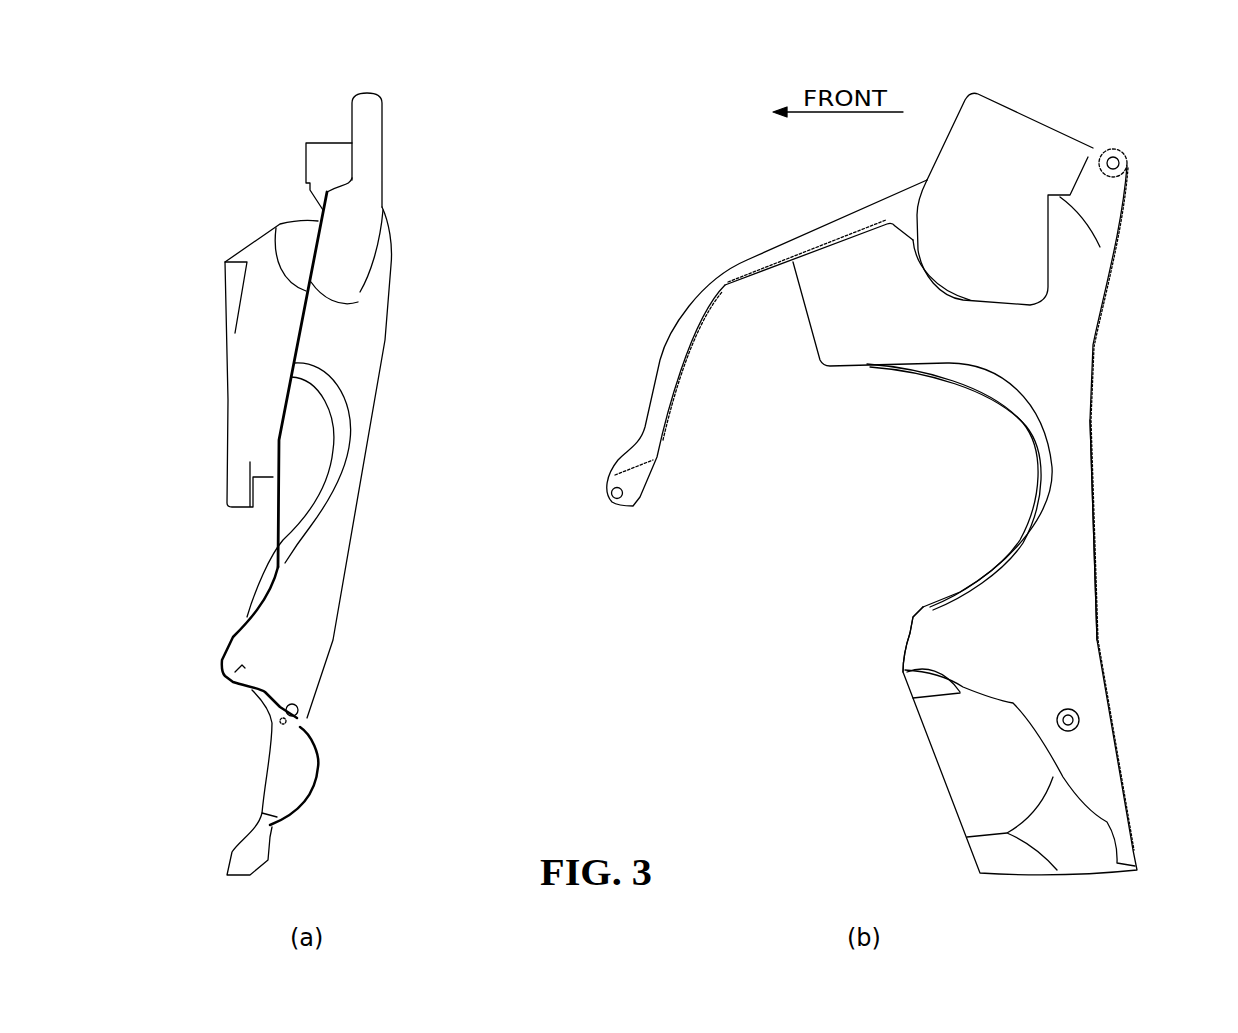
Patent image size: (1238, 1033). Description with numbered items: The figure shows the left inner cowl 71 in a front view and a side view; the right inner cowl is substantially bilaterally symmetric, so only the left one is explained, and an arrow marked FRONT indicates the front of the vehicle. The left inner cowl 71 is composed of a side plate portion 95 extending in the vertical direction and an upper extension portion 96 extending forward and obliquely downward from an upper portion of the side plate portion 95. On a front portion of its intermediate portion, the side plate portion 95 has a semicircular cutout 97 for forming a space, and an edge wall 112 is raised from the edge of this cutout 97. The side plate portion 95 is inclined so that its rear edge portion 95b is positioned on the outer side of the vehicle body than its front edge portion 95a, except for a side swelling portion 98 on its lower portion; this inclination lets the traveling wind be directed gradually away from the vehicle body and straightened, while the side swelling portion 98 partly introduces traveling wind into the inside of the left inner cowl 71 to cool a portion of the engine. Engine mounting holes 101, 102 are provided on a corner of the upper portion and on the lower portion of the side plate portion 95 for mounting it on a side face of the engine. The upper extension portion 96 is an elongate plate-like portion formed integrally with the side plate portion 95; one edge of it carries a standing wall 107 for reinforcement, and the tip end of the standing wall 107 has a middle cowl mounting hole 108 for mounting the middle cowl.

The left inner cowl 71 is at (157, 157).
The side plate portion 95 is at (386, 366).
The front edge portion 95a is at (907, 633).
The rear edge portion 95b is at (1098, 603).
The upper extension portion 96 is at (226, 383).
The semicircular cutout 97 is at (325, 474).
The side swelling portion 98 is at (318, 767).
The engine mounting hole 101 is at (307, 160).
The engine mounting hole 102 is at (296, 705).
The standing wall 107 is at (300, 285).
The middle cowl mounting hole 108 is at (223, 500).
The edge wall 112 is at (288, 508).